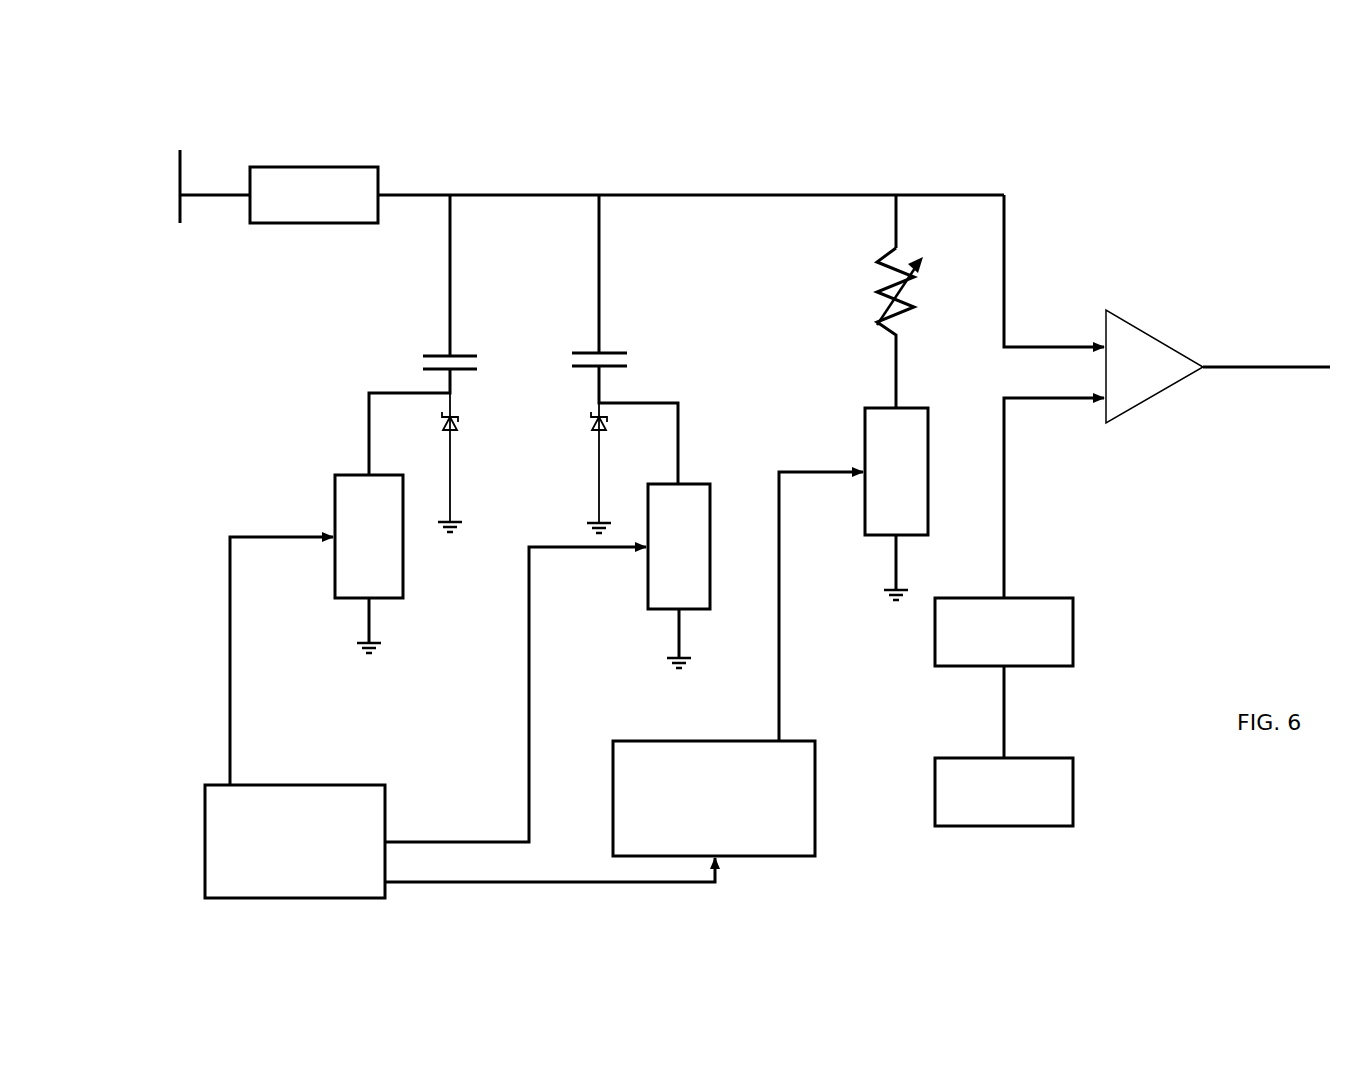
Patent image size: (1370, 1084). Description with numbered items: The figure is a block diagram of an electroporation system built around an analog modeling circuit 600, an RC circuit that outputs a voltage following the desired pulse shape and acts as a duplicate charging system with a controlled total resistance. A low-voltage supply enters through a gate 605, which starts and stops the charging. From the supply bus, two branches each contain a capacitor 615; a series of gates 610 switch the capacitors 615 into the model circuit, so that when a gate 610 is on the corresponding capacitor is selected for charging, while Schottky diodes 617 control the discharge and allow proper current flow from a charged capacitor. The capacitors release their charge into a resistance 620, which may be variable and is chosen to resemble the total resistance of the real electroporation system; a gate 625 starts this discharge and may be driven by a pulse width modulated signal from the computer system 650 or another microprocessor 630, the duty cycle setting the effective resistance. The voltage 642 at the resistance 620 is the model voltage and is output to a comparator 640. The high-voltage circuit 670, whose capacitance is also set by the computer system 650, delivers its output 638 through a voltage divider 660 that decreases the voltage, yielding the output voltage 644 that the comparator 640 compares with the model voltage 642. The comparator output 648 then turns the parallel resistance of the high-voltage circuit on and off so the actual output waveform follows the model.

The analog modeling circuit 600 is at (575, 229).
The gate 605 is at (278, 200).
The gates 610 is at (337, 474).
The capacitors 615 is at (563, 366).
The Schottky diodes 617 is at (592, 433).
The resistance 620 is at (897, 290).
The gate 625 is at (878, 432).
The microprocessor 630 is at (624, 677).
The output 638 is at (1005, 700).
The comparator 640 is at (1129, 388).
The model voltage 642 is at (1004, 297).
The output voltage 644 is at (1004, 452).
The output 648 is at (1266, 382).
The computer system 650 is at (295, 900).
The voltage divider 660 is at (1063, 622).
The high-voltage circuit 670 is at (1070, 782).